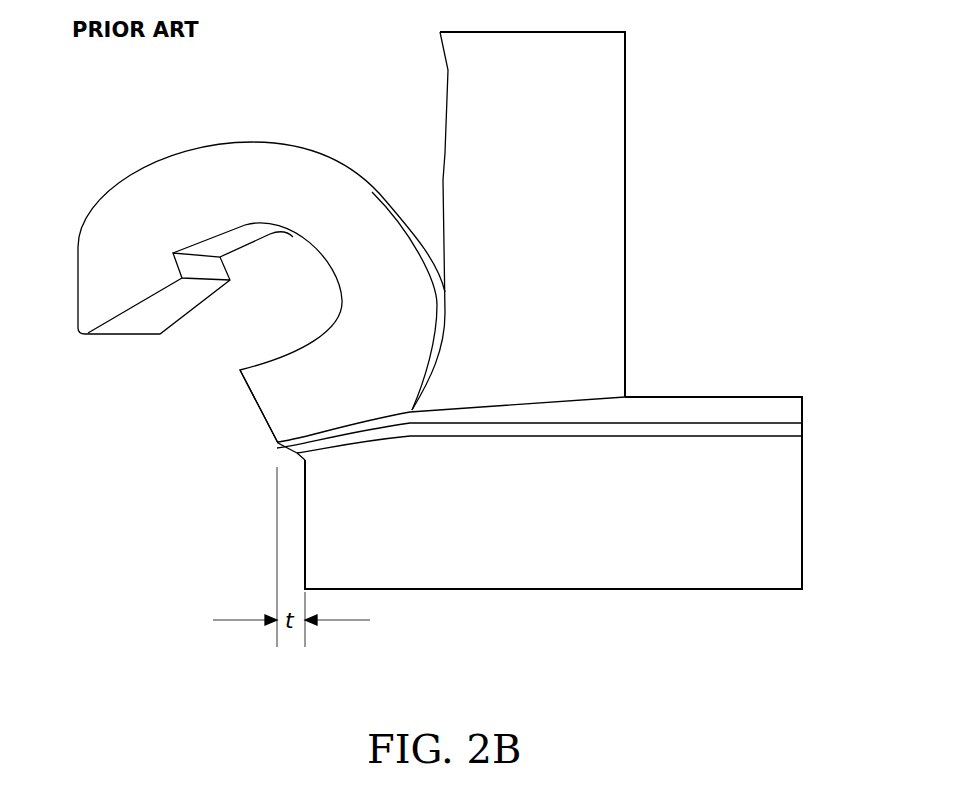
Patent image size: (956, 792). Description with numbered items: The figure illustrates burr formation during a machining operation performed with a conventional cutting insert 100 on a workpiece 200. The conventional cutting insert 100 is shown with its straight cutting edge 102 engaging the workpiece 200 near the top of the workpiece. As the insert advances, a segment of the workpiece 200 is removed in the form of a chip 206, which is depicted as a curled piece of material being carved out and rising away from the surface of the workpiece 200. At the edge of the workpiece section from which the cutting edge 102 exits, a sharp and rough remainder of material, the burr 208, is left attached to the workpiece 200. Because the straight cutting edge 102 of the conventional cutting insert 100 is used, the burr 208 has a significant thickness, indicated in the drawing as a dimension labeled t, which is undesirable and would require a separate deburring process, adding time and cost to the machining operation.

The conventional cutting insert 100 is at (624, 95).
The cutting edge 102 is at (410, 413).
The workpiece 200 is at (613, 604).
The chip 206 is at (252, 142).
The burr 208 is at (297, 450).